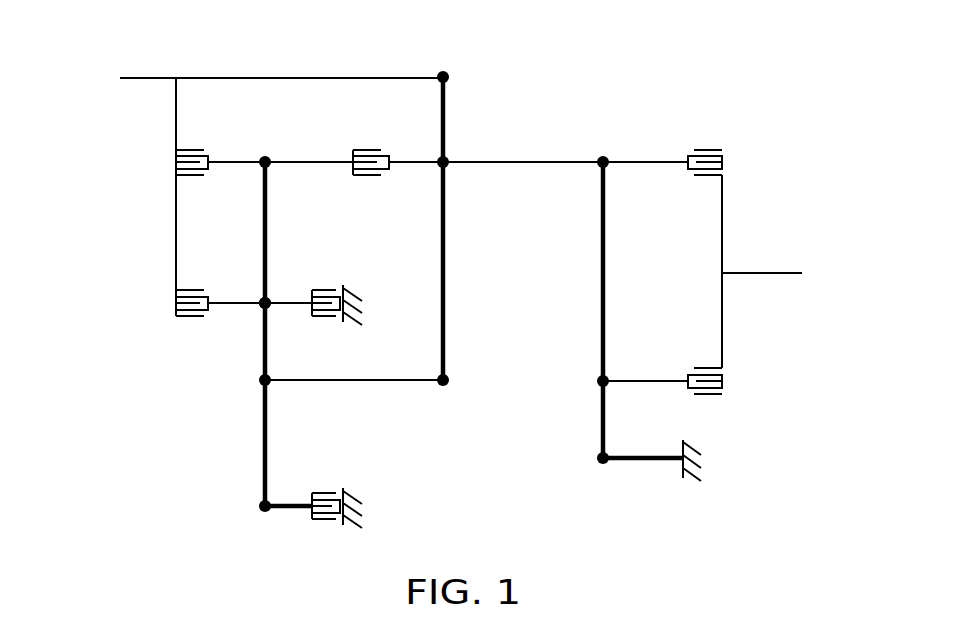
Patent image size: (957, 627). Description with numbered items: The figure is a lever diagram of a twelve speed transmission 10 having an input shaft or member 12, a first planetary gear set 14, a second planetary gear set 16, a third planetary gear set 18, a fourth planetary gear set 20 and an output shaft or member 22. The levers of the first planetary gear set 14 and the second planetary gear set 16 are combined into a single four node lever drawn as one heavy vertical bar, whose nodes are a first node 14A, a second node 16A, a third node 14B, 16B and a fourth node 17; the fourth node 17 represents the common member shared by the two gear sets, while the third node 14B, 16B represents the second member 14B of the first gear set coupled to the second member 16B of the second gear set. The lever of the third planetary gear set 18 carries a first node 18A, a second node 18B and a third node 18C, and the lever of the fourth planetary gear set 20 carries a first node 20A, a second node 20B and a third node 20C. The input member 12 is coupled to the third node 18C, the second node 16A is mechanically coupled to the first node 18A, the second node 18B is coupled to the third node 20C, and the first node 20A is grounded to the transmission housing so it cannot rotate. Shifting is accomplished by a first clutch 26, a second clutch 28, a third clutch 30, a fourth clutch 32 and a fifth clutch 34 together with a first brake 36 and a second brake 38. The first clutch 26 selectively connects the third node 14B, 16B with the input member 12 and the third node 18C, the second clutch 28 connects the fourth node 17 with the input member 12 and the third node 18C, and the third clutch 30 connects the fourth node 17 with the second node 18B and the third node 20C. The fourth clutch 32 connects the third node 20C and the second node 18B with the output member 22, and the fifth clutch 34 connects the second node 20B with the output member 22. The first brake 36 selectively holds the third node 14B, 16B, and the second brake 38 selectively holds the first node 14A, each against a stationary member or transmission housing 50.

The transmission 10 is at (786, 71).
The input shaft or member 12 is at (133, 80).
The first planetary gear set 14 is at (241, 516).
The first node 14A is at (261, 505).
The second member of the first planetary gear set 14B is at (262, 309).
The second planetary gear set 16 is at (293, 264).
The second node 16A is at (261, 384).
The second member of the second planetary gear set 16B is at (265, 303).
The fourth node 17 is at (267, 157).
The third planetary gear set 18 is at (471, 364).
The first node 18A is at (443, 386).
The second node 18B is at (446, 168).
The third node 18C is at (443, 72).
The fourth planetary gear set 20 is at (566, 406).
The first node 20A is at (603, 463).
The second node 20B is at (599, 380).
The third node 20C is at (603, 157).
The output shaft or member 22 is at (790, 276).
The first clutch 26 is at (178, 318).
The second clutch 28 is at (190, 177).
The third clutch 30 is at (372, 177).
The fourth clutch 32 is at (700, 177).
The fifth clutch 34 is at (700, 396).
The first brake 36 is at (320, 318).
The second brake 38 is at (318, 520).
The stationary member or transmission housing 50 is at (348, 322).